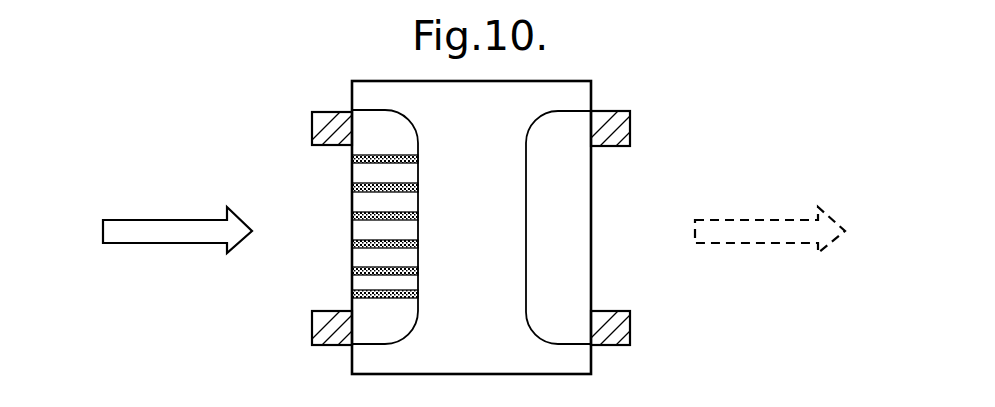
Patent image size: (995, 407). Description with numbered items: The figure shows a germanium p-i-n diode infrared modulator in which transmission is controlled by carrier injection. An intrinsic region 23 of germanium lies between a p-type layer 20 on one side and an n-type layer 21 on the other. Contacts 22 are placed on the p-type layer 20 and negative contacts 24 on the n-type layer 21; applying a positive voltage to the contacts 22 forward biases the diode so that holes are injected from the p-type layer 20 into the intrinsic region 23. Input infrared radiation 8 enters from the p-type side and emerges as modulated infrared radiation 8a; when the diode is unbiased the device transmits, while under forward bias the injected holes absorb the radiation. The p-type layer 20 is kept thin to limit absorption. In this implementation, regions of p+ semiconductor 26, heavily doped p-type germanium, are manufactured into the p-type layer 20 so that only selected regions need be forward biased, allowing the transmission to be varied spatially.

The input infrared radiation 8 is at (153, 225).
The modulated infrared radiation 8a is at (748, 226).
The p-type layer 20 is at (387, 122).
The n-type layer 21 is at (557, 120).
The contacts 22 is at (313, 127).
The intrinsic region 23 is at (483, 119).
The negative contacts 24 is at (618, 130).
The regions of p+ semiconductor 26 is at (340, 166).